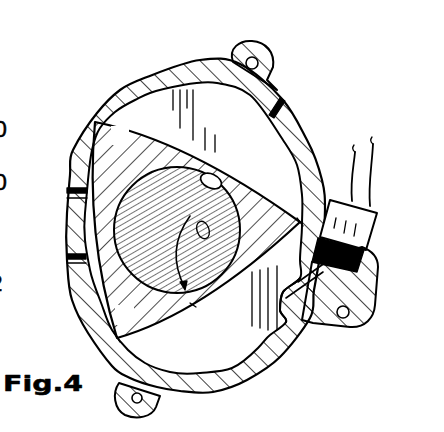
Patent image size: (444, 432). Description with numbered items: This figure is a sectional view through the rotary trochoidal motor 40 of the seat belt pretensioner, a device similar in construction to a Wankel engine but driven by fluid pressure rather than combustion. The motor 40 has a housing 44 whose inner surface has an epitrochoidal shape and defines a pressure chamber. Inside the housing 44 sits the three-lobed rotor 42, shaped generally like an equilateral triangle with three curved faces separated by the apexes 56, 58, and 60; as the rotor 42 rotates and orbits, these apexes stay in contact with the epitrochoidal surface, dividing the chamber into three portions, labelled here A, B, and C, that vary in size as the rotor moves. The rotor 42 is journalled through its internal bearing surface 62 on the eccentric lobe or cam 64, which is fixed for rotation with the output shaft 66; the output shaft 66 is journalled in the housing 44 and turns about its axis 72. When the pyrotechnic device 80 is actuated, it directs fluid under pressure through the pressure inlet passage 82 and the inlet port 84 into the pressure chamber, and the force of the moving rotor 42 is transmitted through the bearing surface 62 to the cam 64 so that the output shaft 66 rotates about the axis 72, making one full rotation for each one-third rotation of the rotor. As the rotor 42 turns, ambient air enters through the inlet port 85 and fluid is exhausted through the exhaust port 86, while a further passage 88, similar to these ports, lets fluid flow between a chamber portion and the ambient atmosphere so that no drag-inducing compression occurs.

The rotary trochoidal motor 40 is at (72, 121).
The three-lobed rotor 42 is at (203, 143).
The housing 44 is at (116, 89).
The apex 56 is at (290, 207).
The apex 58 is at (90, 120).
The apex 60 is at (117, 338).
The internal bearing surface 62 is at (223, 183).
The eccentric lobe or cam 64 is at (150, 169).
The output shaft 66 is at (193, 305).
The axis 72 is at (225, 285).
The pyrotechnic device 80 is at (379, 209).
The pressure inlet passage 82 is at (323, 290).
The inlet port 84 is at (286, 324).
The inlet port 85 is at (67, 192).
The exhaust port 86 is at (66, 261).
The passage 88 is at (280, 100).
The working chamber A is at (276, 229).
The working chamber B is at (123, 315).
The working chamber C is at (120, 135).